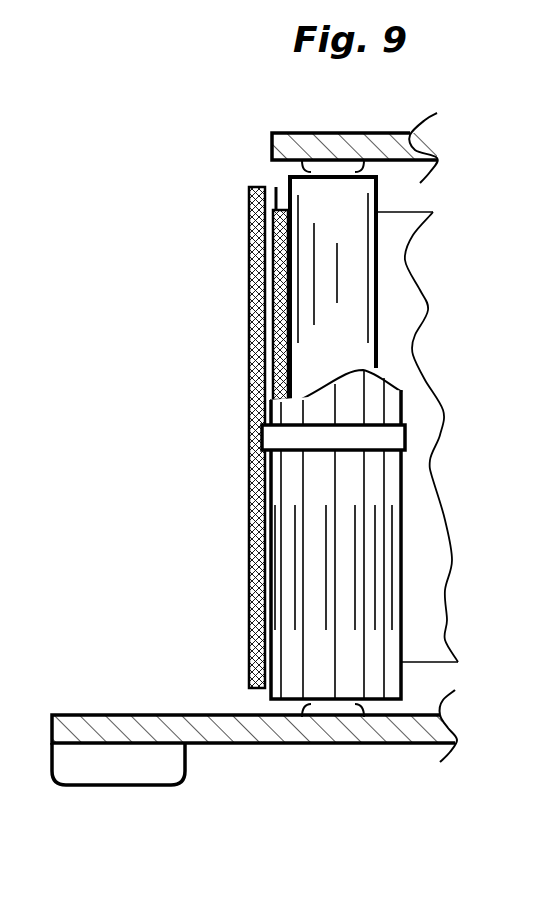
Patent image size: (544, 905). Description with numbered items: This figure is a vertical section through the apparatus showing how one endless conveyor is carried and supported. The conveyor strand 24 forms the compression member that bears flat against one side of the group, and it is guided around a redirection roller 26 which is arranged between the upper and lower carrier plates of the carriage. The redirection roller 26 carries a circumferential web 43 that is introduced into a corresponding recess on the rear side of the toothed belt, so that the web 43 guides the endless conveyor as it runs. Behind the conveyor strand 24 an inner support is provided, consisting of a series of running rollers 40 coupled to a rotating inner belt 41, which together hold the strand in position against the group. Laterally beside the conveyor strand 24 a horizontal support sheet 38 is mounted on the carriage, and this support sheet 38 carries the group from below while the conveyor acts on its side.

The running roller 40 is at (352, 312).
The inner belt 41 is at (278, 308).
The conveyor strand 24 is at (253, 348).
The redirection roller 26 is at (316, 485).
The circumferential web 43 is at (395, 437).
The support sheet 38 is at (117, 762).